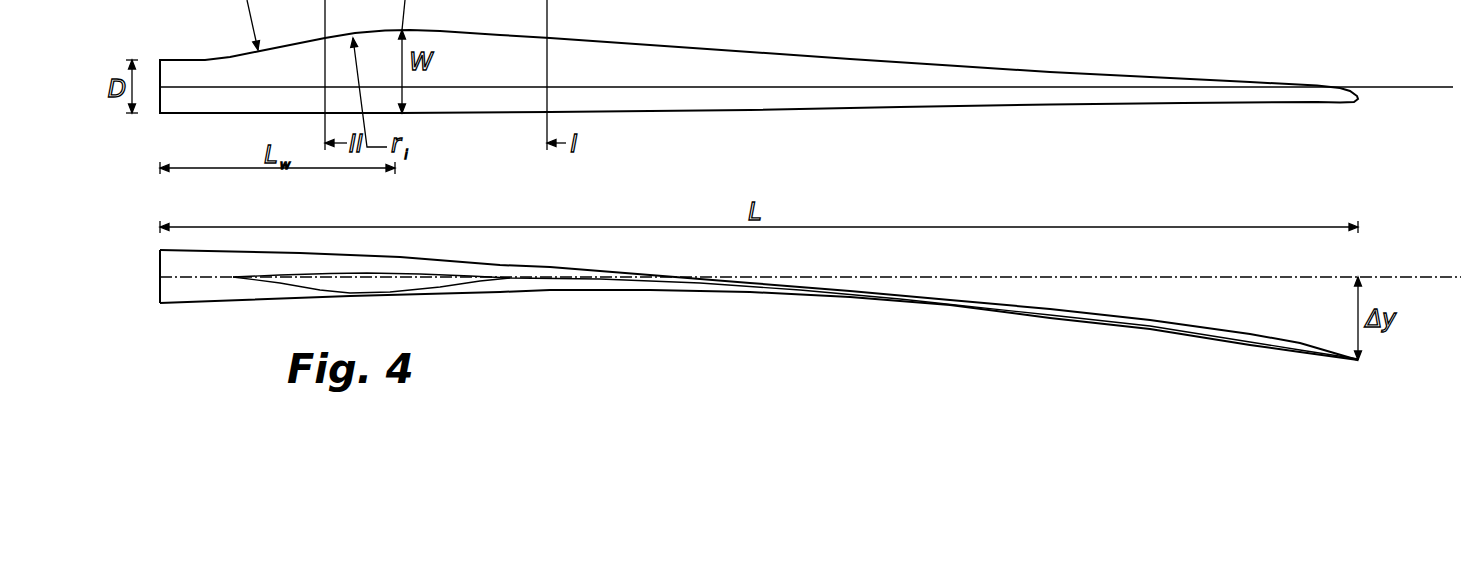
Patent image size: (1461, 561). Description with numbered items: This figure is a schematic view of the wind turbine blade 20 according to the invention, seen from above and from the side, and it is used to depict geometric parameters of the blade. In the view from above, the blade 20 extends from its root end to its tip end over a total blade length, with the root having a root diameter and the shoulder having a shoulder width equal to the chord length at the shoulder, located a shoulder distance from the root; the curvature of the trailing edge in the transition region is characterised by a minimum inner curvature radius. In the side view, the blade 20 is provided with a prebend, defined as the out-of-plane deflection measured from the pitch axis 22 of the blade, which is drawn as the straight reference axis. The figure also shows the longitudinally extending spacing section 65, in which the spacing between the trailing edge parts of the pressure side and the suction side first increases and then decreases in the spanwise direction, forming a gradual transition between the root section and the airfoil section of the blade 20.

The wind turbine blade 20 is at (582, 280).
The pitch axis 22 is at (633, 86).
The longitudinally extending spacing section 65 is at (385, 287).